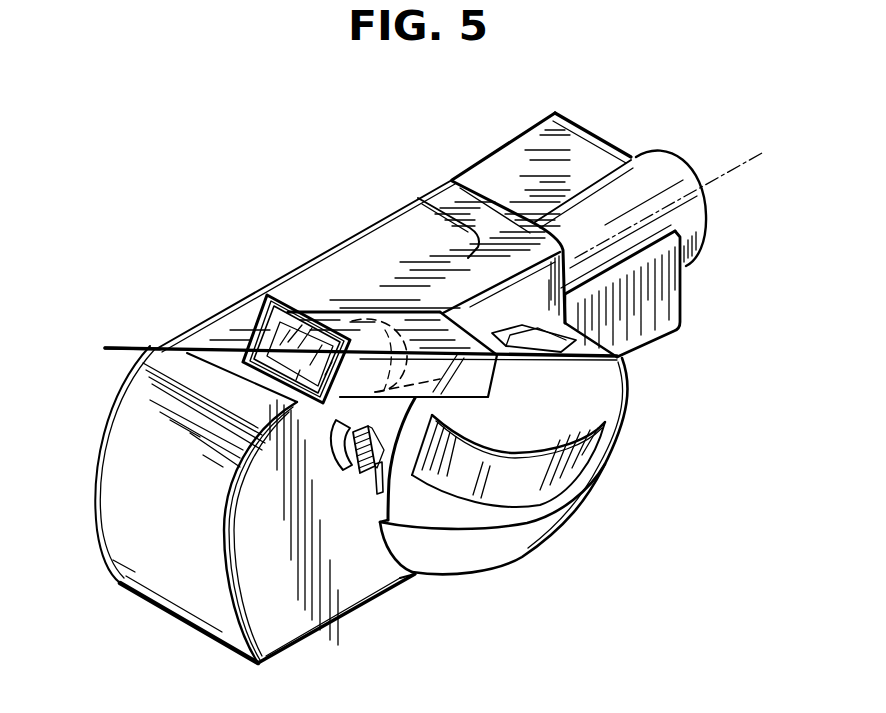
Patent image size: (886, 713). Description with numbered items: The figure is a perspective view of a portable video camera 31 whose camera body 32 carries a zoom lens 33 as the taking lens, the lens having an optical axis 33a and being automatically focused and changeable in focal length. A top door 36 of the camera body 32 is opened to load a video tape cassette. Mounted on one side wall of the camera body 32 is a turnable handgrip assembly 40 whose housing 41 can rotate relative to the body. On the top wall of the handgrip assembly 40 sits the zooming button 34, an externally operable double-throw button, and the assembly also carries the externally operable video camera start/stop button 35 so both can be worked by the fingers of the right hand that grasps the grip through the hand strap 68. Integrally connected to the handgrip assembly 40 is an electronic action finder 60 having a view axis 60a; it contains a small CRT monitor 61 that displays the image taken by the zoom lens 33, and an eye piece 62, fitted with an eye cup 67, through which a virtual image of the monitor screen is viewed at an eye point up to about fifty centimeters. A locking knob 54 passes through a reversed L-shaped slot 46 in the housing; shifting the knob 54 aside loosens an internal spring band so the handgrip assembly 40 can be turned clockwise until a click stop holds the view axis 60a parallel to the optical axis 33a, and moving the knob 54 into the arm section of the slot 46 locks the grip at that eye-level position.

The portable video camera 31 is at (300, 232).
The camera body 32 is at (130, 386).
The zoom lens 33 is at (660, 160).
The optical axis 33a is at (731, 170).
The zooming button 34 is at (568, 348).
The video camera start/stop button 35 is at (340, 452).
The top door 36 is at (372, 240).
The handgrip assembly 40 is at (633, 427).
The housing 41 is at (393, 562).
The L-shaped slot 46 is at (378, 484).
The knob 54 is at (360, 470).
The action finder 60 is at (368, 312).
The view axis 60a is at (133, 346).
The CRT monitor 61 is at (438, 387).
The eye piece 62 is at (292, 318).
The eye cup 67 is at (298, 404).
The hand strap 68 is at (543, 496).